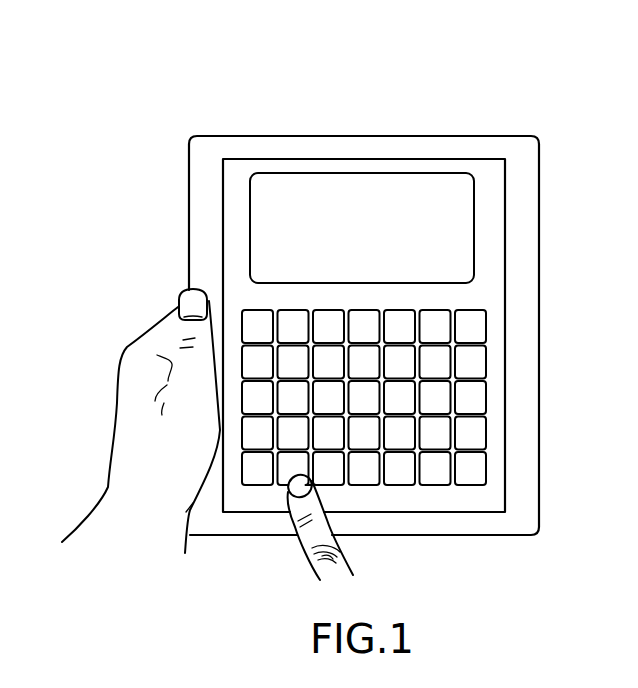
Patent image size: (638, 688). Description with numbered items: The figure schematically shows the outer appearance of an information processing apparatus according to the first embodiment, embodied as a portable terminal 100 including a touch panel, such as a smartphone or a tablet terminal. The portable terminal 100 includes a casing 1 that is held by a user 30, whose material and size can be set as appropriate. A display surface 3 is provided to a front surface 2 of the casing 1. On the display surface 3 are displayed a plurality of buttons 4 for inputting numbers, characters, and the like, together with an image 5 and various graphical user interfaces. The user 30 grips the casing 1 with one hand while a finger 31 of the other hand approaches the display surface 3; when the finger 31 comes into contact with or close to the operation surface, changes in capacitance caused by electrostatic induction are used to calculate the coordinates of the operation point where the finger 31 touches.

The portable terminal 100 is at (373, 96).
The casing 1 is at (529, 170).
The front surface 2 is at (529, 288).
The display surface 3 is at (235, 232).
The buttons 4 is at (475, 468).
The image 5 is at (425, 183).
The user 30 is at (133, 483).
The finger 31 is at (307, 538).